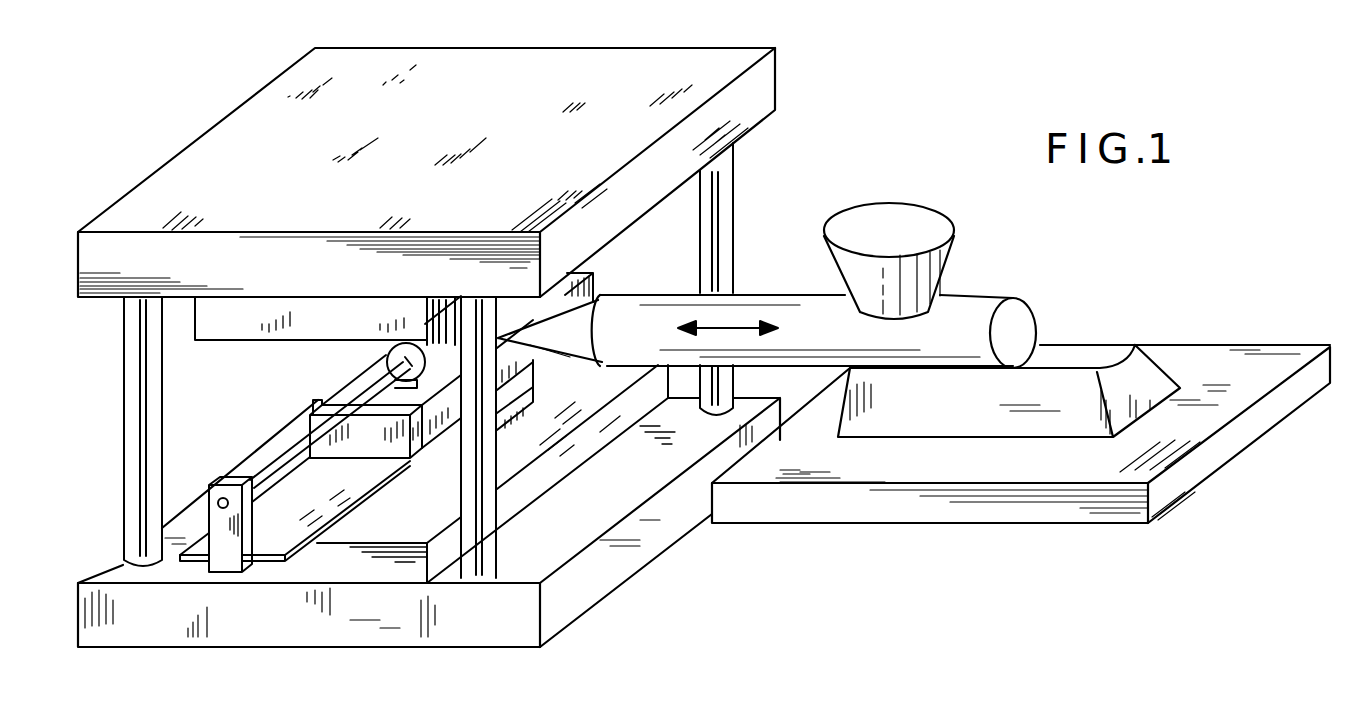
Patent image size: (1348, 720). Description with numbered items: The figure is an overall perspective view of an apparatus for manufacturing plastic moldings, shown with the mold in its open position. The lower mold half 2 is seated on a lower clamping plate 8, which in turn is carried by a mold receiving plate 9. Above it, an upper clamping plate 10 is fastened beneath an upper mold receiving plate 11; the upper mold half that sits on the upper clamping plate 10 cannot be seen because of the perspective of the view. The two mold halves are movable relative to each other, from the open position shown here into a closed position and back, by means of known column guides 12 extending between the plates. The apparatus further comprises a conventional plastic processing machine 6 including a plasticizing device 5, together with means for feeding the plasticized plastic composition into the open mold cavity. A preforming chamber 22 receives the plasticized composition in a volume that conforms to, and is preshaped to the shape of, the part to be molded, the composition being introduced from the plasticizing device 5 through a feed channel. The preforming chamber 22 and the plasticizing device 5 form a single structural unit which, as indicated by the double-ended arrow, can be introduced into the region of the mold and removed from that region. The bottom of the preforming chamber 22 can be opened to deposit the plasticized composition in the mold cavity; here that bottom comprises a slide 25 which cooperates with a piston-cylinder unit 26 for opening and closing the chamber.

The lower mold half 2 is at (433, 457).
The plasticizing device 5 is at (641, 312).
The plastic processing machine 6 is at (997, 538).
The lower clamping plate 8 is at (415, 568).
The mold receiving plate 9 is at (127, 623).
The upper clamping plate 10 is at (229, 326).
The upper mold receiving plate 11 is at (483, 66).
The column guides 12 is at (720, 200).
The preforming chamber 22 is at (363, 433).
The slide 25 is at (295, 527).
The piston-cylinder unit 26 is at (387, 352).